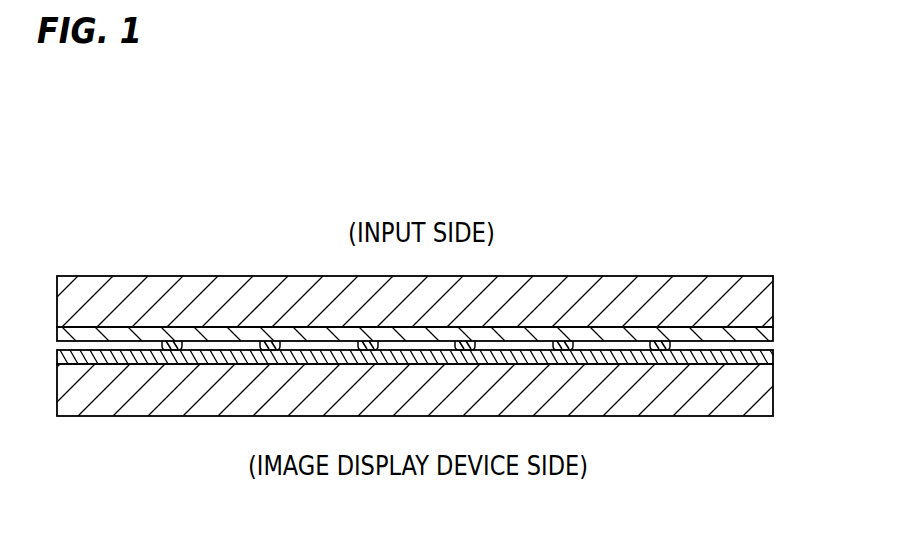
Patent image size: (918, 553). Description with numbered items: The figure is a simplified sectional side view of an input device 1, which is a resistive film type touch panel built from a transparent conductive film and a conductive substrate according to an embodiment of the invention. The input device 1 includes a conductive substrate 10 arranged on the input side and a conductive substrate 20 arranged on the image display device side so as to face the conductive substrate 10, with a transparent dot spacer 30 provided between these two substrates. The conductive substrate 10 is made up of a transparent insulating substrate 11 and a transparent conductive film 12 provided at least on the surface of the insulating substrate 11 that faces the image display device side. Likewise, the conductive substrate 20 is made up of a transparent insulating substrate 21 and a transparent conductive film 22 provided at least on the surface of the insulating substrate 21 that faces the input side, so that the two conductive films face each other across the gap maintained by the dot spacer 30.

The input device 1 is at (595, 208).
The conductive substrate 10 is at (722, 266).
The transparent insulating substrate 11 is at (760, 302).
The transparent conductive film 12 is at (765, 332).
The conductive substrate 20 is at (733, 427).
The transparent insulating substrate 21 is at (757, 386).
The transparent conductive film 22 is at (763, 355).
The transparent dot spacer 30 is at (178, 341).